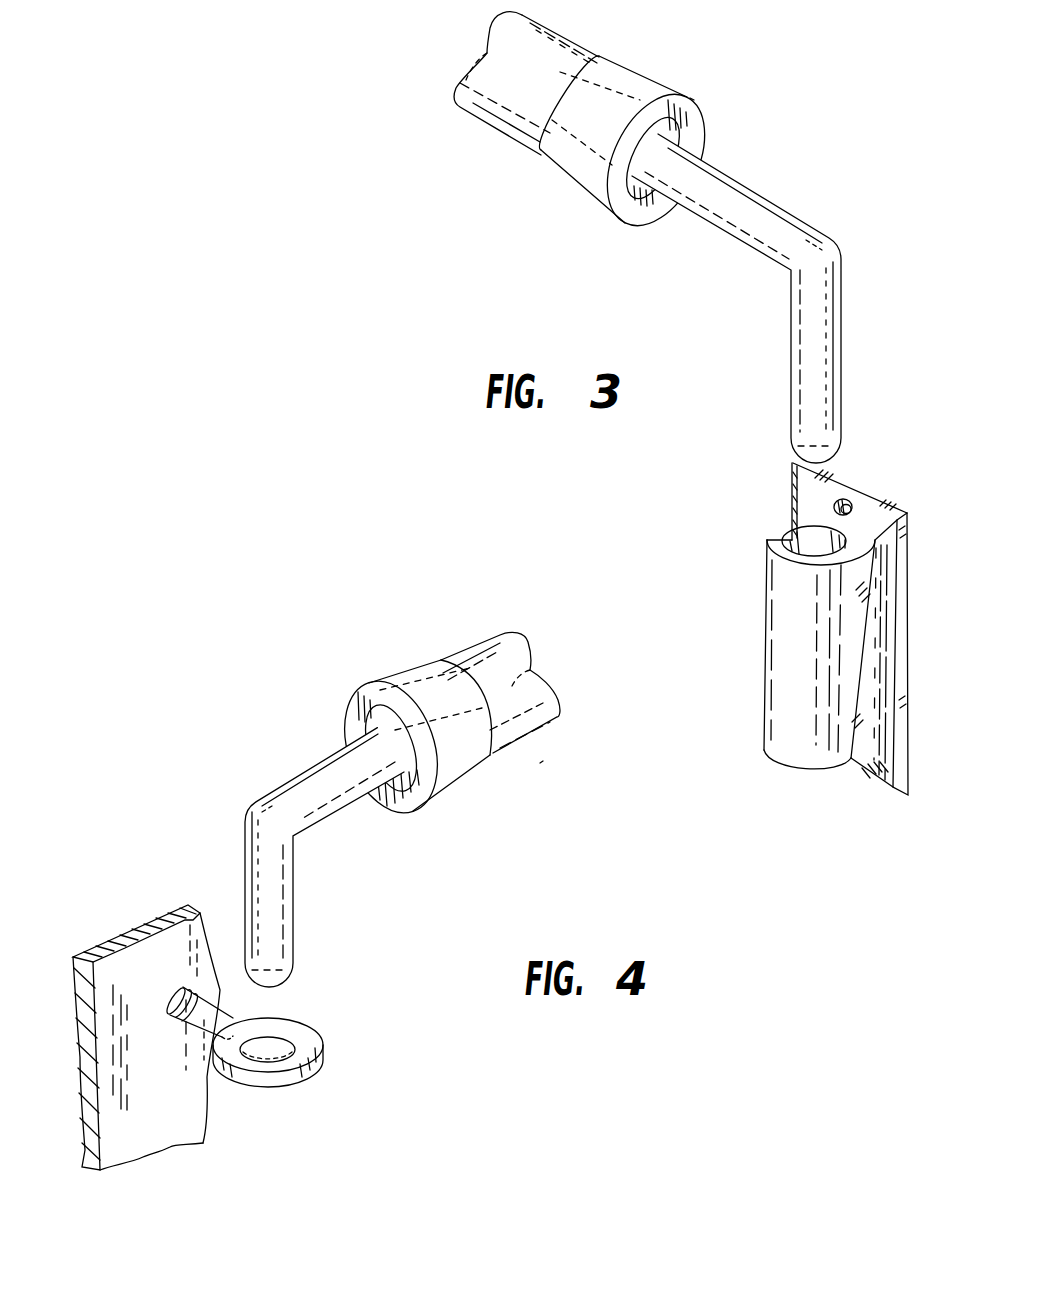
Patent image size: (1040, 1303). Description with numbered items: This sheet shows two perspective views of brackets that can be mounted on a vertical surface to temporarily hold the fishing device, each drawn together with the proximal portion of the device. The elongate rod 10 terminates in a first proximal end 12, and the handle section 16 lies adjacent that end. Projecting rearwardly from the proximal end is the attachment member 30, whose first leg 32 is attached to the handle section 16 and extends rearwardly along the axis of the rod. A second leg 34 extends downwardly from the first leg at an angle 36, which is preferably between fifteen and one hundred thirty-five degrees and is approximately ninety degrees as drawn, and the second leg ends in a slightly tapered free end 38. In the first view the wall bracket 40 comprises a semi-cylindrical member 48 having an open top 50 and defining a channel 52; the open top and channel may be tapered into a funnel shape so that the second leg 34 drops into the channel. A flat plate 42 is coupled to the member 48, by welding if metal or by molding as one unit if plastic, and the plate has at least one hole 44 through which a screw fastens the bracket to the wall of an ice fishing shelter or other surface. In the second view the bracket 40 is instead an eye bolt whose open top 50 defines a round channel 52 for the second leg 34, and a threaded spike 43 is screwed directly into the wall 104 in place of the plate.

In FIG. 3, the elongate rod 10 is at (648, 60).
In FIG. 4, the elongate rod 10 is at (540, 762).
In FIG. 3, the first proximal end 12 is at (685, 163).
In FIG. 4, the first proximal end 12 is at (367, 702).
In FIG. 3, the handle section 16 is at (487, 103).
In FIG. 4, the handle section 16 is at (470, 763).
In FIG. 3, the attachment member 30 is at (718, 298).
In FIG. 4, the attachment member 30 is at (272, 849).
In FIG. 3, the first leg 32 is at (748, 202).
In FIG. 4, the first leg 32 is at (337, 805).
In FIG. 3, the second leg 34 is at (812, 343).
In FIG. 4, the second leg 34 is at (247, 850).
In FIG. 3, the angle 36 is at (788, 268).
In FIG. 4, the angle 36 is at (300, 835).
In FIG. 3, the free end 38 is at (815, 448).
In FIG. 4, the free end 38 is at (273, 980).
In FIG. 3, the wall bracket 40 is at (769, 657).
In FIG. 4, the wall bracket 40 is at (288, 1074).
In FIG. 3, the flat plate 42 is at (883, 747).
In FIG. 4, the threaded spike 43 is at (207, 1035).
In FIG. 3, the hole 44 is at (847, 508).
In FIG. 3, the semi-cylindrical member 48 is at (802, 713).
In FIG. 3, the open top 50 is at (787, 533).
In FIG. 4, the open top 50 is at (300, 1052).
In FIG. 3, the channel 52 is at (810, 540).
In FIG. 4, the channel 52 is at (273, 1053).
In FIG. 4, the wall 104 is at (145, 1108).